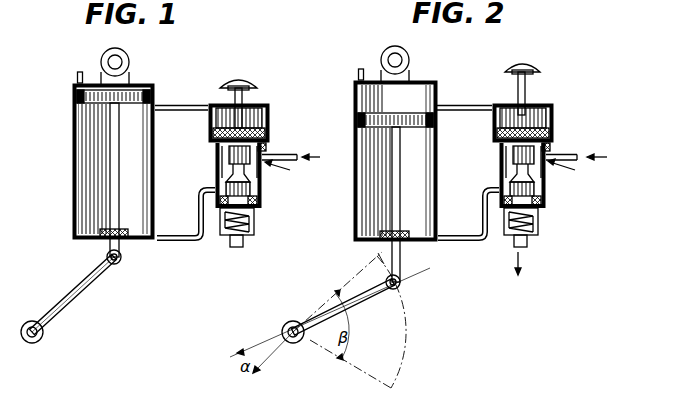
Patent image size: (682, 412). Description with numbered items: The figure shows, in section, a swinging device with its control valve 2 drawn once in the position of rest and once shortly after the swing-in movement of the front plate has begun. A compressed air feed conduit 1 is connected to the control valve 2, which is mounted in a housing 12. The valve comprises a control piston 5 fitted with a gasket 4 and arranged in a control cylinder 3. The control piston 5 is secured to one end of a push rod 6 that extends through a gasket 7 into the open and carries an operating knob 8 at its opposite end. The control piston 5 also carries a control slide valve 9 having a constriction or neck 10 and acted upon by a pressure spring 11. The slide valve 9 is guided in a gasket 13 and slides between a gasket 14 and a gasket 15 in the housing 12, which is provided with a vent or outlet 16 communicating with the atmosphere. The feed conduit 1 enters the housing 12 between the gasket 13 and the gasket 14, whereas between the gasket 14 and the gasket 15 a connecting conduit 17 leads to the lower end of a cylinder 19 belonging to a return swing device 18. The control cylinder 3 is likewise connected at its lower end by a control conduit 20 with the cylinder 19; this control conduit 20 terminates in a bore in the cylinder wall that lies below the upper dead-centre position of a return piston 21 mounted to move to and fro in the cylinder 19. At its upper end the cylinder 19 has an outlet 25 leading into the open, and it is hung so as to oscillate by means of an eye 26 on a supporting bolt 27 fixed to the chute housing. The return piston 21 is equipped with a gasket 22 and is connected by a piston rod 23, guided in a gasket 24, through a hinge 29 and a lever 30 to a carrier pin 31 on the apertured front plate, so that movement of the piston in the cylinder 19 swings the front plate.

In FIG. 1, the compressed air feed conduit 1 is at (290, 156).
In FIG. 2, the compressed air feed conduit 1 is at (577, 156).
In FIG. 1, the control valve 2 is at (282, 170).
In FIG. 2, the control valve 2 is at (566, 170).
In FIG. 1, the control cylinder 3 is at (263, 110).
In FIG. 2, the control cylinder 3 is at (552, 127).
In FIG. 1, the gasket 4 is at (263, 132).
In FIG. 2, the gasket 4 is at (491, 115).
In FIG. 1, the control piston 5 is at (213, 132).
In FIG. 2, the control piston 5 is at (550, 115).
In FIG. 1, the push rod 6 is at (240, 113).
In FIG. 2, the push rod 6 is at (527, 85).
In FIG. 1, the gasket 7 is at (227, 101).
In FIG. 2, the gasket 7 is at (508, 101).
In FIG. 1, the operating knob 8 is at (250, 80).
In FIG. 2, the operating knob 8 is at (534, 65).
In FIG. 1, the control slide valve 9 is at (257, 187).
In FIG. 2, the control slide valve 9 is at (542, 187).
In FIG. 1, the constriction or neck 10 is at (228, 157).
In FIG. 2, the constriction or neck 10 is at (512, 153).
In FIG. 1, the pressure spring 11 is at (252, 222).
In FIG. 2, the pressure spring 11 is at (535, 220).
In FIG. 1, the housing 12 is at (221, 152).
In FIG. 2, the housing 12 is at (503, 157).
In FIG. 1, the gasket 13 is at (265, 145).
In FIG. 2, the gasket 13 is at (545, 144).
In FIG. 1, the gasket 14 is at (222, 173).
In FIG. 2, the gasket 14 is at (505, 172).
In FIG. 1, the gasket 15 is at (258, 201).
In FIG. 2, the gasket 15 is at (541, 203).
In FIG. 1, the vent or outlet 16 is at (245, 241).
In FIG. 2, the vent or outlet 16 is at (529, 240).
In FIG. 1, the connecting conduit 17 is at (190, 241).
In FIG. 2, the connecting conduit 17 is at (466, 242).
In FIG. 1, the return swing device 18 is at (90, 255).
In FIG. 2, the return swing device 18 is at (378, 274).
In FIG. 1, the cylinder 19 is at (72, 164).
In FIG. 2, the cylinder 19 is at (354, 174).
In FIG. 1, the control conduit 20 is at (167, 104).
In FIG. 2, the control conduit 20 is at (452, 105).
In FIG. 1, the return piston 21 is at (73, 89).
In FIG. 2, the return piston 21 is at (360, 111).
In FIG. 1, the gasket 22 is at (76, 97).
In FIG. 2, the gasket 22 is at (356, 127).
In FIG. 1, the piston rod 23 is at (110, 128).
In FIG. 2, the piston rod 23 is at (393, 200).
In FIG. 1, the gasket 24 is at (127, 233).
In FIG. 2, the gasket 24 is at (409, 236).
In FIG. 1, the outlet 25 is at (78, 72).
In FIG. 2, the outlet 25 is at (359, 72).
In FIG. 1, the eye 26 is at (131, 76).
In FIG. 2, the eye 26 is at (412, 77).
In FIG. 1, the supporting bolt 27 is at (108, 52).
In FIG. 2, the supporting bolt 27 is at (386, 54).
In FIG. 1, the hinge 29 is at (122, 257).
In FIG. 2, the hinge 29 is at (401, 277).
In FIG. 1, the lever 30 is at (100, 273).
In FIG. 2, the lever 30 is at (367, 298).
In FIG. 1, the carrier pin 31 is at (43, 334).
In FIG. 2, the carrier pin 31 is at (291, 321).